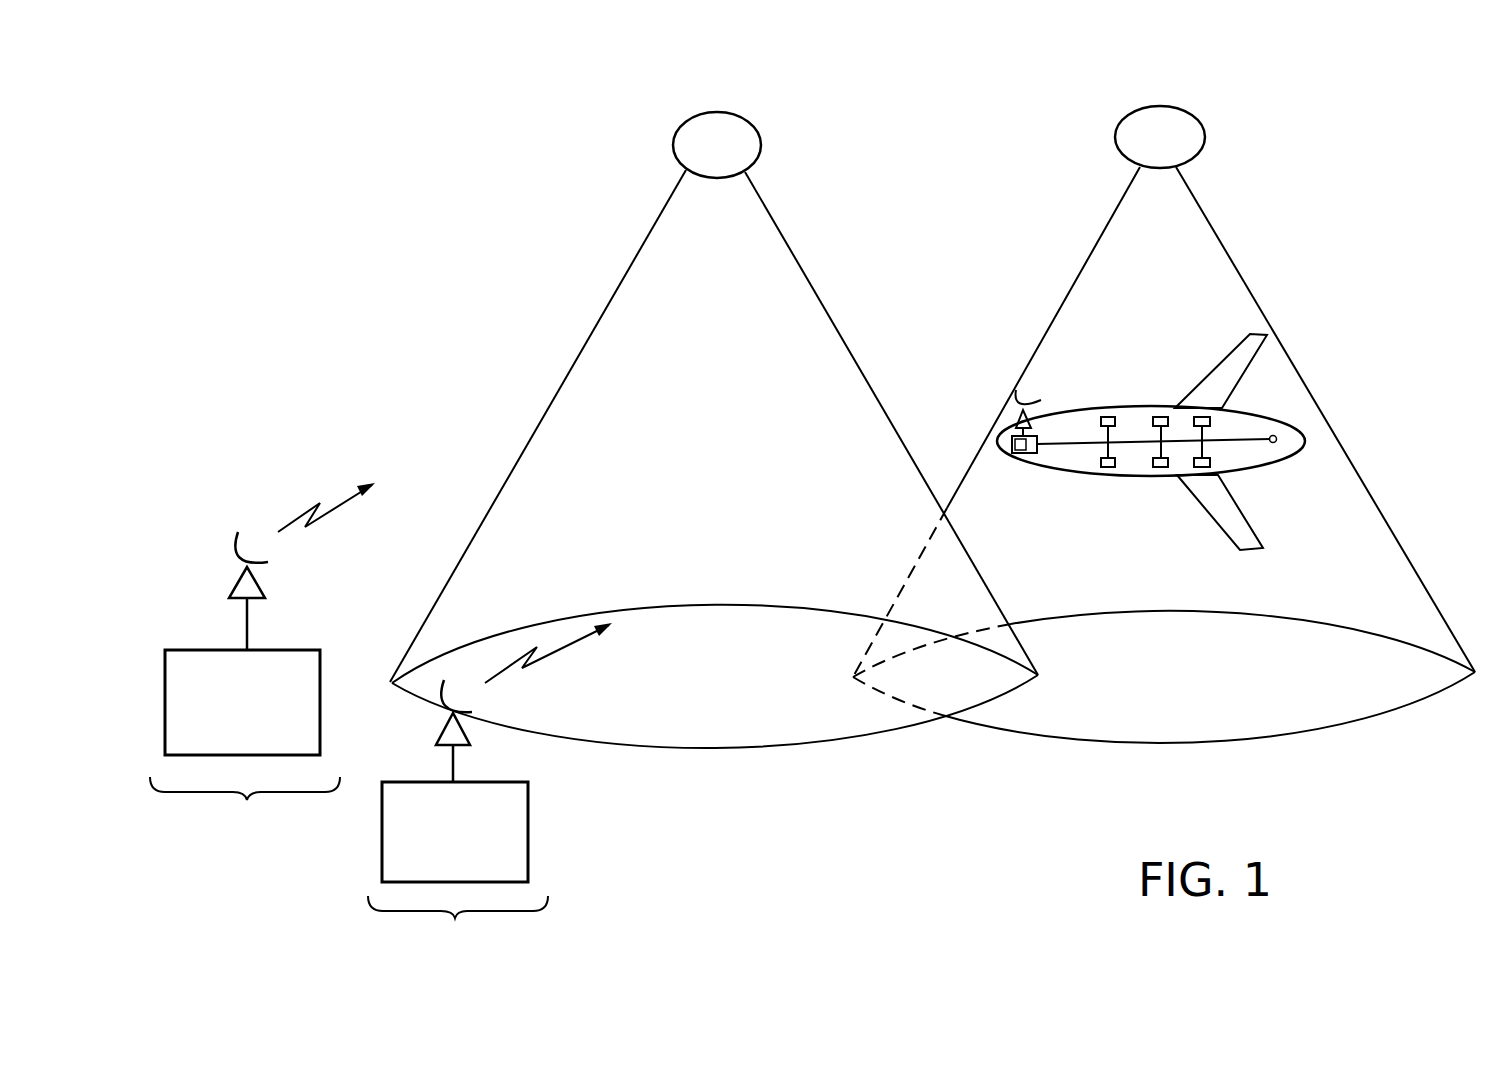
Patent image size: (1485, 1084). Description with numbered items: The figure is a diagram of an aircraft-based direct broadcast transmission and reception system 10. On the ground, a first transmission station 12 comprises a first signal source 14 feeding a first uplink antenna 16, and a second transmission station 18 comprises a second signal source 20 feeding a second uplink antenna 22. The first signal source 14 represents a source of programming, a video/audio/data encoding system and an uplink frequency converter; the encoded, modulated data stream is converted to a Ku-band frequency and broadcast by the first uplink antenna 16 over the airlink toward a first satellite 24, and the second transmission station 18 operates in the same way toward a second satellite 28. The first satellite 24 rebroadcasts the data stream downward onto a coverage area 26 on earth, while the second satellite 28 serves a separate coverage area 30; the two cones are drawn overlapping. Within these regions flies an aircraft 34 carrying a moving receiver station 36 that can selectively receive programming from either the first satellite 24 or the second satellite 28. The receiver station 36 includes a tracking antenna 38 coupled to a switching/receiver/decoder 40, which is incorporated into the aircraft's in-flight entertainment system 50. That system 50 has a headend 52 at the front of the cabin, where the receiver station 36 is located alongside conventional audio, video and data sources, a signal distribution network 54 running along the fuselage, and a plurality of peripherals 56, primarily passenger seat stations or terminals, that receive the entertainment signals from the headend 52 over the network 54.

The direct broadcast transmission and reception system 10 is at (425, 292).
The first transmission station 12 is at (263, 681).
The first signal source 14 is at (320, 733).
The first uplink antenna 16 is at (232, 548).
The second transmission station 18 is at (479, 785).
The second signal source 20 is at (528, 832).
The second uplink antenna 22 is at (430, 700).
The first satellite 24 is at (745, 118).
The coverage area of the first satellite 26 is at (722, 340).
The second satellite 28 is at (1195, 113).
The coverage area of the second satellite 30 is at (1160, 257).
The aircraft 34 is at (1048, 472).
The moving receiver station 36 is at (1063, 396).
The tracking antenna 38 is at (1017, 398).
The switching/receiver/decoder 40 is at (1012, 441).
The in-flight entertainment system 50 is at (1076, 428).
The headend 52 is at (1027, 455).
The signal distribution network 54 is at (1248, 445).
The peripherals 56 is at (1212, 418).